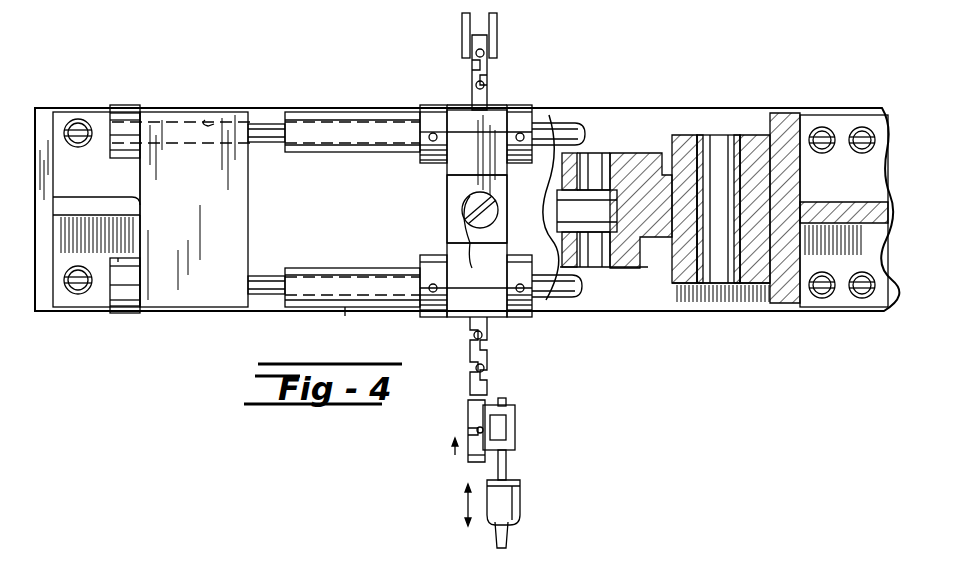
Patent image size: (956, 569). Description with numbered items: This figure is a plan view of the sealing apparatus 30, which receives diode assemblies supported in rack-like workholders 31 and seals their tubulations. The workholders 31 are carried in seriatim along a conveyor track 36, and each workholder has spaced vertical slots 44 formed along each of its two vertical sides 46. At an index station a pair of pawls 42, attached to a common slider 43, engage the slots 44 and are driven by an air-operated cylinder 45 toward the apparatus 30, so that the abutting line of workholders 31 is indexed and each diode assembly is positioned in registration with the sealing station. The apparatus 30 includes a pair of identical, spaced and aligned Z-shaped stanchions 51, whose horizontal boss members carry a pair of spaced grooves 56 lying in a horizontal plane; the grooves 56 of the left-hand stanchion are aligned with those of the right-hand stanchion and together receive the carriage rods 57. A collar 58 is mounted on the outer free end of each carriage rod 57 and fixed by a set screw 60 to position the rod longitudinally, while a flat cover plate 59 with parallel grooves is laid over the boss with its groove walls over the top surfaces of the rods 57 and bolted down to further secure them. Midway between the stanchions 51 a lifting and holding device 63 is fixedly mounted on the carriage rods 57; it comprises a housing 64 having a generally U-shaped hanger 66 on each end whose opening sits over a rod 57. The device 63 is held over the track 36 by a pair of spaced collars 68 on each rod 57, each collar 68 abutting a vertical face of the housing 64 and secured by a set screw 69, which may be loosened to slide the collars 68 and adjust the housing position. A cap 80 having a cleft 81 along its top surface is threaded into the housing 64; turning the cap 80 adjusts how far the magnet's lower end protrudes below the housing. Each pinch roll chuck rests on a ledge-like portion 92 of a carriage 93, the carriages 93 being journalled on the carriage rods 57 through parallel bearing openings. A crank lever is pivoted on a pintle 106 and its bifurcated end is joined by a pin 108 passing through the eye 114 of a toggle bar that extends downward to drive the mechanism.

The apparatus 30 is at (630, 330).
The workholder 31 is at (466, 456).
The conveyor track 36 is at (497, 30).
The pawl 42 is at (490, 408).
The slider 43 is at (516, 428).
The vertical slot 44 is at (474, 335).
The air-operated cylinder 45 is at (522, 500).
The vertical side 46 is at (467, 410).
The stanchion 51 is at (180, 108).
The groove 56 is at (240, 110).
The carriage rod 57 is at (578, 122).
The collar 58 is at (128, 106).
The cover plate 59 is at (165, 265).
The set screw 60 is at (124, 313).
The lifting and holding device 63 is at (426, 92).
The housing 64 is at (453, 188).
The U-shaped hanger 66 is at (500, 108).
The collar 68 is at (436, 104).
The set screw 69 is at (516, 137).
The cap 80 is at (474, 171).
The cleft 81 is at (466, 243).
The ledge-like portion 92 is at (350, 300).
The carriage 93 is at (388, 308).
The pintle 106 is at (708, 284).
The pin 108 is at (592, 268).
The eye 114 is at (623, 152).